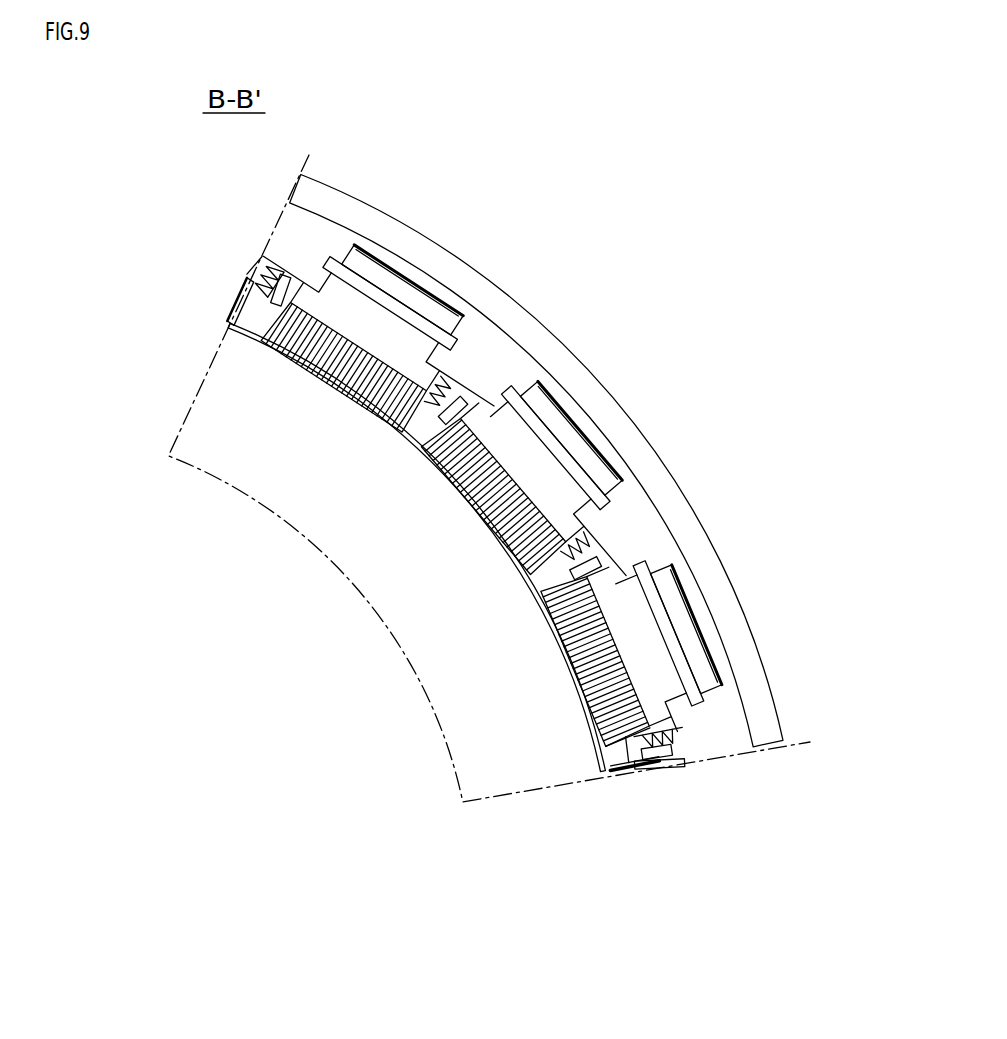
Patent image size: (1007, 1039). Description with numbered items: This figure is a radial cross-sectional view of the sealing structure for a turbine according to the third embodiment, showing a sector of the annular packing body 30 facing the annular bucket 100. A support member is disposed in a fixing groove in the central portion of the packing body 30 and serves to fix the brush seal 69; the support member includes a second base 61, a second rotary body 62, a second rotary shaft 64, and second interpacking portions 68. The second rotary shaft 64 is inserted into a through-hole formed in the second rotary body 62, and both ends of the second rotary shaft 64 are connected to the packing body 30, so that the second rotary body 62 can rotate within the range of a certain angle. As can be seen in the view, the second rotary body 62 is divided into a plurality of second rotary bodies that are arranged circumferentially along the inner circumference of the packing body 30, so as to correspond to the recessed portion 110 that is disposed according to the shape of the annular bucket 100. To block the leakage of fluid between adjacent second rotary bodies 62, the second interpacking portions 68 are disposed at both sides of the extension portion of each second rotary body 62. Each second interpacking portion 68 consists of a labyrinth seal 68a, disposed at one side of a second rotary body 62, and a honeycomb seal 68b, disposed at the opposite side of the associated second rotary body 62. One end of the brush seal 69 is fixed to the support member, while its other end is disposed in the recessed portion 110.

The packing body 30 is at (557, 358).
The second base 61 is at (623, 533).
The second rotary body 62 is at (633, 650).
The second rotary shaft 64 is at (657, 607).
The second interpacking portion 68 is at (673, 847).
The labyrinth seal 68a is at (673, 750).
The honeycomb seal 68b is at (647, 750).
The brush seal 69 is at (600, 727).
The annular bucket 100 is at (393, 598).
The recessed portion 110 is at (226, 333).